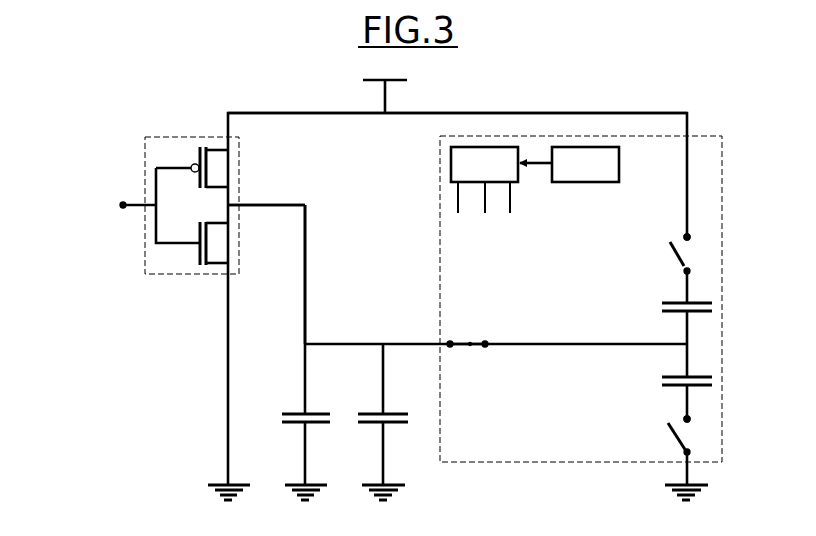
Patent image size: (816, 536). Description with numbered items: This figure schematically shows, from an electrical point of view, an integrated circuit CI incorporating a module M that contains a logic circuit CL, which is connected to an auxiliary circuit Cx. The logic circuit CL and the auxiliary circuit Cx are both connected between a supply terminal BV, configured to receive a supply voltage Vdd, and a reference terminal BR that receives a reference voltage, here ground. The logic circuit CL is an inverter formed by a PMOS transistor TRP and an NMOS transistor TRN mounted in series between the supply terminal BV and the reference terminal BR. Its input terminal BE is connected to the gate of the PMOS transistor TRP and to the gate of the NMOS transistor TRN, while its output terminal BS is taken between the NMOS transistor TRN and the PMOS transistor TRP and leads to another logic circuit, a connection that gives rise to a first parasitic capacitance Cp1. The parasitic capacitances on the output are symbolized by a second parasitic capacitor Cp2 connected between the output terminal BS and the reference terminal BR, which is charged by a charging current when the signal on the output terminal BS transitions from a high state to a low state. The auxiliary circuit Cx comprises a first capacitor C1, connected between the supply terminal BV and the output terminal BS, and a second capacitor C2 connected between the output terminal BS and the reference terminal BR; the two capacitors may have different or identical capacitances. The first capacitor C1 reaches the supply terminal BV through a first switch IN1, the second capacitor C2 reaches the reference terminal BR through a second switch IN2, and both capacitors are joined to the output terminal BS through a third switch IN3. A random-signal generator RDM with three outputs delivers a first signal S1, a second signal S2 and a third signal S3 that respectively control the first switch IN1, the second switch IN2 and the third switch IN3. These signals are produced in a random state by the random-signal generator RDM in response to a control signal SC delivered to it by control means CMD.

The logic circuit CL is at (180, 135).
The input terminal BE is at (123, 200).
The PMOS transistor TRP is at (232, 168).
The NMOS transistor TRN is at (232, 243).
The output terminal BS is at (306, 204).
The supply terminal BV is at (378, 109).
The supply voltage Vdd is at (385, 87).
The random-signal generator RDM is at (484, 164).
The control means CMD is at (585, 164).
The control signal SC is at (535, 168).
The first signal S1 is at (664, 256).
The second signal S2 is at (664, 438).
The third signal S3 is at (468, 336).
The first switch IN1 is at (671, 233).
The second switch IN2 is at (663, 421).
The third switch IN3 is at (470, 352).
The first capacitor C1 is at (660, 303).
The second capacitor C2 is at (660, 378).
The auxiliary circuit Cx is at (723, 300).
The first parasitic capacitance Cp1 is at (292, 410).
The second parasitic capacitor Cp2 is at (370, 410).
The reference terminal BR is at (206, 485).
The module M is at (153, 424).
The integrated circuit CI is at (100, 497).